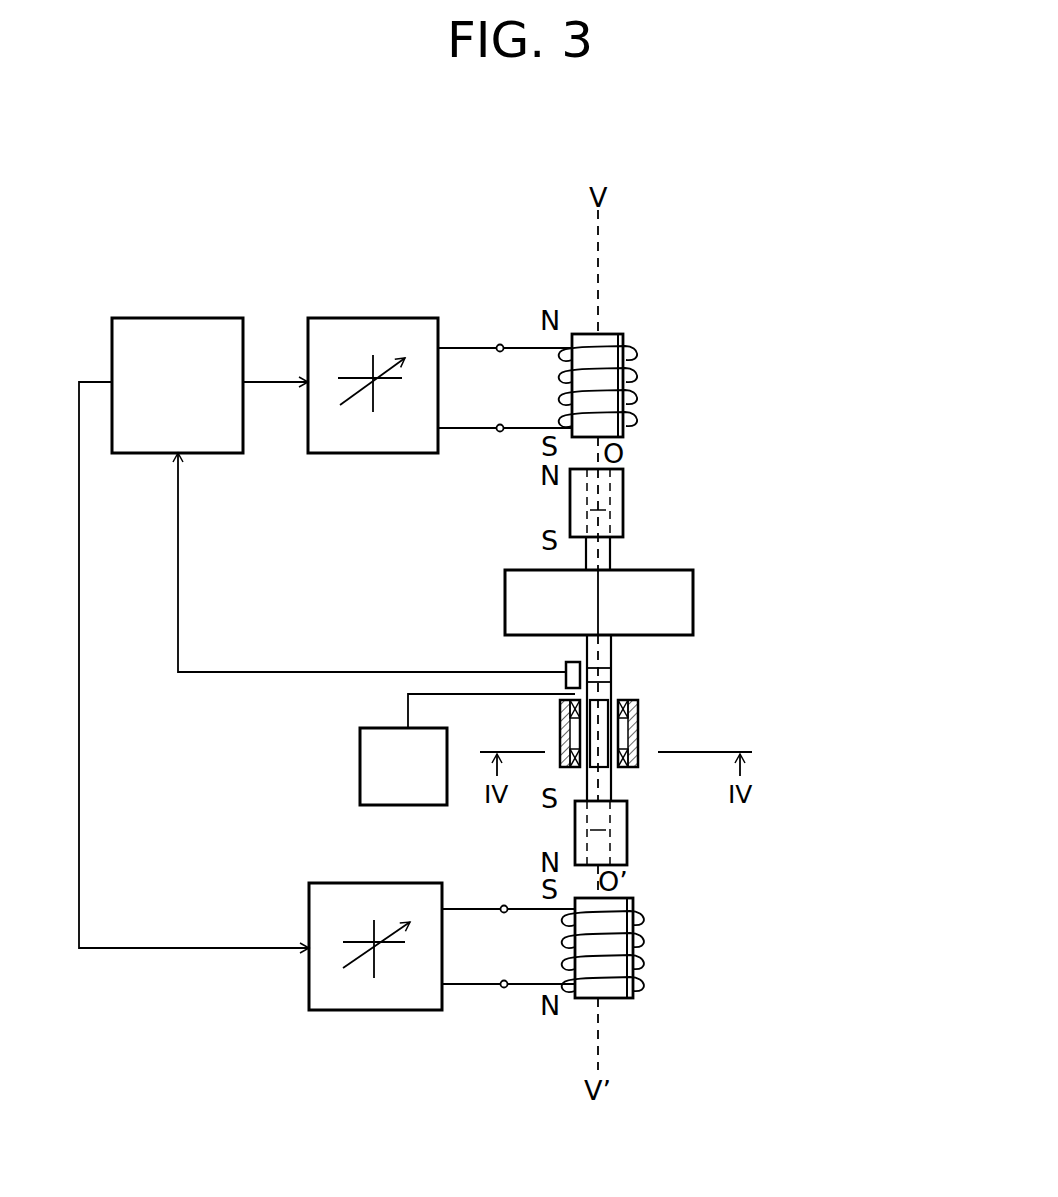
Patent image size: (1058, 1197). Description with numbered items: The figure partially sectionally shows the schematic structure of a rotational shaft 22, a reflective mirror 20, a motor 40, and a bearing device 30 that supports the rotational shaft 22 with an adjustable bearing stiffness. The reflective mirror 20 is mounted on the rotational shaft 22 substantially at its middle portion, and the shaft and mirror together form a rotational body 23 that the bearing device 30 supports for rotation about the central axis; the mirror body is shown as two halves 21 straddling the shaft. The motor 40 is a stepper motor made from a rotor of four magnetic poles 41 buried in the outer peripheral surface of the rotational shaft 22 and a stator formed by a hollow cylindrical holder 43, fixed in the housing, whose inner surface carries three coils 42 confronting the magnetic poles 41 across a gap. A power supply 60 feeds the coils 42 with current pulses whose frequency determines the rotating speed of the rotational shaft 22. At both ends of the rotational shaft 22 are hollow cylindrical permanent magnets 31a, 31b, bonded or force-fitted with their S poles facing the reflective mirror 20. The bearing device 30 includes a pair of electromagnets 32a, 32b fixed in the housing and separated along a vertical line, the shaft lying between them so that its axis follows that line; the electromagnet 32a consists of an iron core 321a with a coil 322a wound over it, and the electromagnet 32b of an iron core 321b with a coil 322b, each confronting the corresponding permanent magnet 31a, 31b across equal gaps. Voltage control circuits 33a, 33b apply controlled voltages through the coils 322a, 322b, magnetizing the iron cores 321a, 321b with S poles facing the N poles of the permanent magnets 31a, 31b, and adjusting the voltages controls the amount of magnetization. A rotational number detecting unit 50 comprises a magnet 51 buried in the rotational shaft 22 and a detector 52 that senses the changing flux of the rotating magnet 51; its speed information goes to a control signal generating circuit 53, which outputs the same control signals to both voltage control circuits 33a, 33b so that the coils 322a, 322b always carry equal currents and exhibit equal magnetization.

The reflective mirror 20 is at (633, 564).
The rotor body half 21 is at (533, 585).
The rotational shaft 22 is at (616, 548).
The rotational body 23 is at (698, 564).
The bearing device 30 is at (792, 312).
The permanent magnet 31a is at (620, 495).
The permanent magnet 31b is at (625, 850).
The electromagnet 32a is at (660, 340).
The electromagnet 32b is at (673, 969).
The iron core 321a is at (605, 345).
The iron core 321b is at (612, 905).
The coil 322a is at (630, 392).
The coil 322b is at (635, 950).
The voltage control circuit 33a is at (362, 318).
The voltage control circuit 33b is at (390, 1010).
The motor 40 is at (711, 738).
The magnetic poles 41 is at (612, 697).
The coils 42 is at (628, 770).
The holder 43 is at (638, 718).
The rotational number detecting unit 50 is at (435, 590).
The magnet 51 is at (566, 665).
The detector 52 is at (573, 662).
The control signal generating circuit 53 is at (200, 438).
The power supply 60 is at (368, 766).